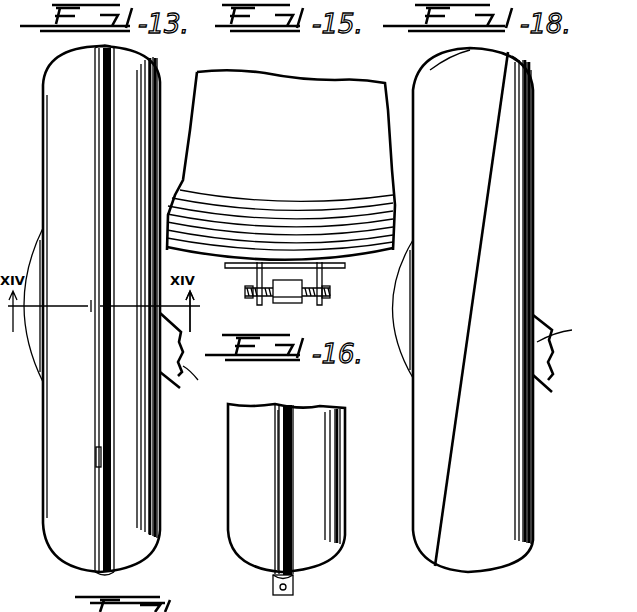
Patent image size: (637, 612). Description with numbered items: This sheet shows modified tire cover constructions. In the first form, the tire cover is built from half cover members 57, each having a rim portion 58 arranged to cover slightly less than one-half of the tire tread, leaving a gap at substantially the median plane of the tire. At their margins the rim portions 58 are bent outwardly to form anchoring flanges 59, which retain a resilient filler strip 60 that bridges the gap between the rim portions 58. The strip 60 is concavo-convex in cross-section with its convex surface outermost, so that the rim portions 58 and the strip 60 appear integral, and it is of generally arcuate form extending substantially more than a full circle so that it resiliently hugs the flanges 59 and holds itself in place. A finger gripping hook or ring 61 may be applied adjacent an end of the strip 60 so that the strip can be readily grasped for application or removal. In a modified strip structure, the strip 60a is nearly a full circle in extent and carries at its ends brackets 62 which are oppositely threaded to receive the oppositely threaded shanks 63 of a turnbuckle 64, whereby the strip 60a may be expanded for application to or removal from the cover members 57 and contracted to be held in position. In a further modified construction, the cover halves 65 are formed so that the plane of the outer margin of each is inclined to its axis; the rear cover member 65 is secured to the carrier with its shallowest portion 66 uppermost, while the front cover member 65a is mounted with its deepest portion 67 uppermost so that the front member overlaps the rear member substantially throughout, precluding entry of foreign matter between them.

In FIG. 13, the half cover members 57 is at (38, 503).
In FIG. 15, the half cover members 57 is at (370, 140).
In FIG. 16, the half cover members 57 is at (228, 506).
In FIG. 13, the rim portion 58 is at (84, 51).
In FIG. 16, the rim portion 58 is at (300, 418).
In FIG. 15, the anchoring flanges 59 is at (285, 265).
In FIG. 13, the resilient filler strip 60 is at (96, 378).
In FIG. 15, the strip 60a is at (380, 258).
In FIG. 16, the strip 60a is at (278, 500).
In FIG. 13, the finger gripping hook or ring 61 is at (94, 456).
In FIG. 15, the brackets 62 is at (265, 283).
In FIG. 16, the brackets 62 is at (294, 583).
In FIG. 15, the threaded shanks 63 is at (252, 298).
In FIG. 16, the threaded shanks 63 is at (282, 592).
In FIG. 15, the turnbuckle 64 is at (295, 302).
In FIG. 18, the cover halves 65 is at (538, 436).
In FIG. 18, the front cover member 65a is at (410, 447).
In FIG. 18, the shallowest portion 66 is at (522, 60).
In FIG. 18, the deepest portion 67 is at (447, 64).